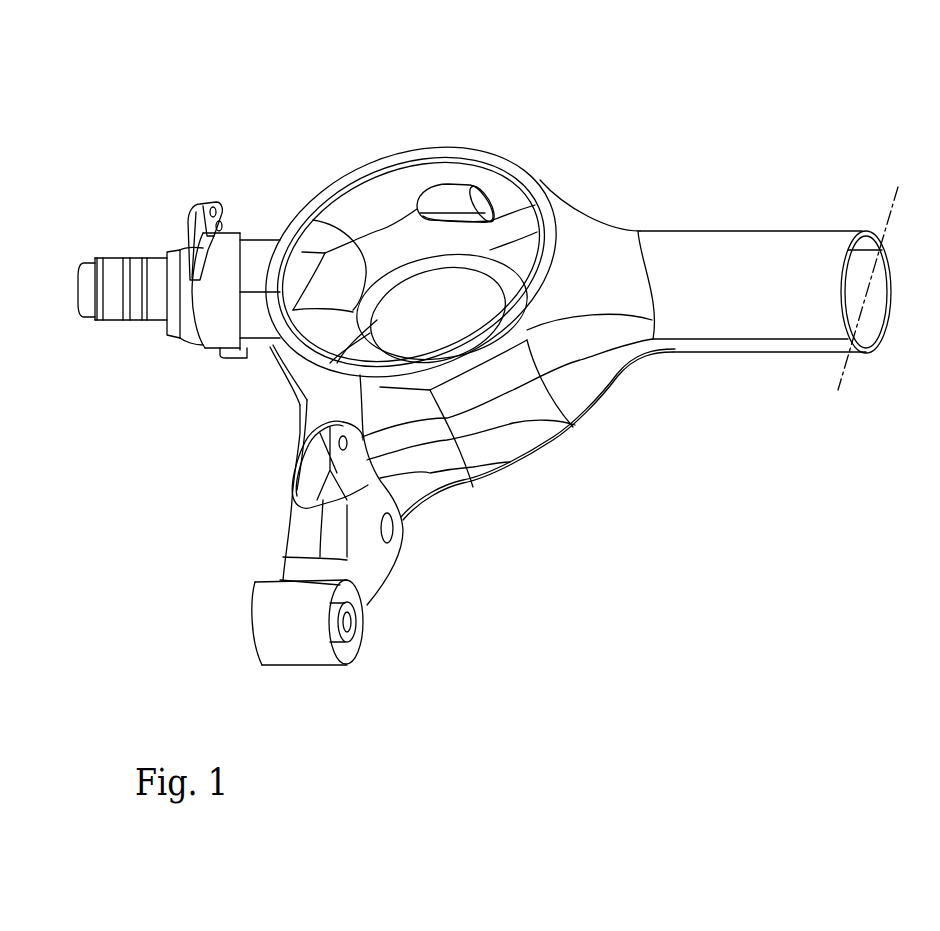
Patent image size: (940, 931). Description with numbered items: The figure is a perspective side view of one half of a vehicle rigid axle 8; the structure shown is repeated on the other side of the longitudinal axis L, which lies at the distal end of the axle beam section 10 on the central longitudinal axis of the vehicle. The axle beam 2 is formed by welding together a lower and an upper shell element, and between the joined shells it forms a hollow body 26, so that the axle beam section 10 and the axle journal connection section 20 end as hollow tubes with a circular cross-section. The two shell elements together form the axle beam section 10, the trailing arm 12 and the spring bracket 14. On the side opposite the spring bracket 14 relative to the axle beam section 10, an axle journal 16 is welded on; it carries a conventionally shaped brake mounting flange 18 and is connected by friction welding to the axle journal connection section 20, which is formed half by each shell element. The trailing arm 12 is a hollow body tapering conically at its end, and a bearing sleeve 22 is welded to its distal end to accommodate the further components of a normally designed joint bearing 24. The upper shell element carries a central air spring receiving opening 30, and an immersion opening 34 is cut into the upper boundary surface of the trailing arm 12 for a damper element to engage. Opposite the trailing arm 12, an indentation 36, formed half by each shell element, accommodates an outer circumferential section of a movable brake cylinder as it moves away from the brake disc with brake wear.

The axle beam 2 is at (605, 213).
The vehicle rigid axle 8 is at (780, 367).
The axle beam section 10 is at (823, 220).
The trailing arm 12 is at (272, 511).
The spring bracket 14 is at (467, 257).
The axle journal 16 is at (120, 266).
The brake mounting flange 18 is at (207, 202).
The axle journal connection section 20 is at (265, 237).
The bearing sleeve 22 is at (300, 635).
The joint bearing 24 is at (363, 638).
The hollow body 26 is at (450, 184).
The central air spring receiving opening 30 is at (365, 213).
The immersion opening 34 is at (297, 453).
The indentation 36 is at (458, 193).